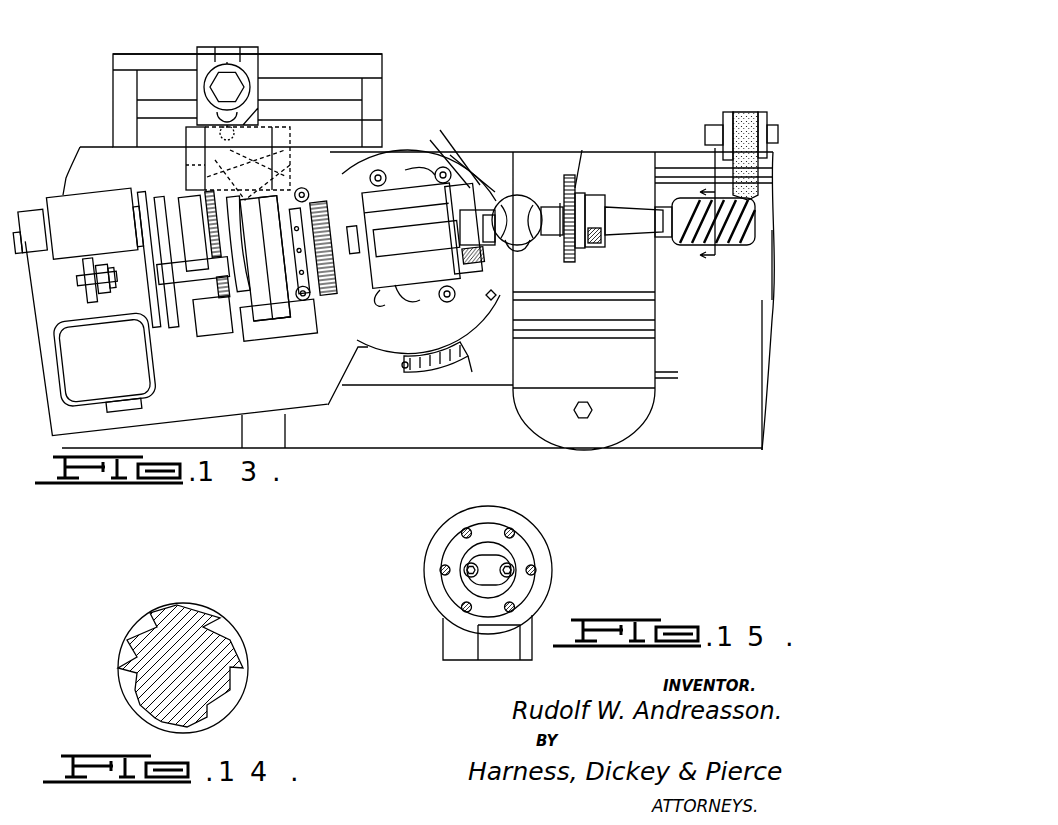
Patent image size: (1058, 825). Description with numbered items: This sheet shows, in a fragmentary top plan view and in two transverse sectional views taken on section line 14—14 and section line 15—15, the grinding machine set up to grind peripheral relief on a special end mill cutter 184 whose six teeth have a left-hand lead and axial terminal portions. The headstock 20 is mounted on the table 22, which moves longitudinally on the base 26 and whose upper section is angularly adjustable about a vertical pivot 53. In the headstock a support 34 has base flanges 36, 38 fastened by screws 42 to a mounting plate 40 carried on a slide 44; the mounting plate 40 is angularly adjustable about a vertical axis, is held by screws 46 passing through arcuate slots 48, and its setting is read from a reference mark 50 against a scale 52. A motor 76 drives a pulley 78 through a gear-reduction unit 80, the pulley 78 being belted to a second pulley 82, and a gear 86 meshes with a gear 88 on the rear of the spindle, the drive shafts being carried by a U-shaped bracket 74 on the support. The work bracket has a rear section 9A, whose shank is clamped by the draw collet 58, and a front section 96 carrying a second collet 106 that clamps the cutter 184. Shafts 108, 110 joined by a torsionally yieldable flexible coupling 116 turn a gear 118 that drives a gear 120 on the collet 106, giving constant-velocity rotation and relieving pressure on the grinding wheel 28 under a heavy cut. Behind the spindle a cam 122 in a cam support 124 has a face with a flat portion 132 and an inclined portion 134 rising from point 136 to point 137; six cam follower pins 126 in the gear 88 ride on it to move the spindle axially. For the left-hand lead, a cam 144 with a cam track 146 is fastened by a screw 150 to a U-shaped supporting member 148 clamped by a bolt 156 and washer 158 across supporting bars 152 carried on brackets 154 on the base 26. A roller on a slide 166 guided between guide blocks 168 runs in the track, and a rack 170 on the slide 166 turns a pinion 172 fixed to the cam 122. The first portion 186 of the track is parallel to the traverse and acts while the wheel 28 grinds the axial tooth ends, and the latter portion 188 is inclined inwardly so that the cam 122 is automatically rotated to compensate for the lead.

In FIG. 13, the line 14— 14 is at (682, 147).
In FIG. 13, the line 15— 15 is at (322, 359).
In FIG. 13, the headstock 20 is at (469, 140).
In FIG. 13, the table 22 is at (671, 373).
In FIG. 13, the base 26 is at (766, 266).
In FIG. 13, the grinding wheel 28 is at (755, 116).
In FIG. 13, the support 34 is at (430, 274).
In FIG. 13, the base flange 36 is at (492, 183).
In FIG. 13, the base flange 38 is at (470, 285).
In FIG. 13, the mounting plate 40 is at (482, 320).
In FIG. 13, the screws 42 is at (380, 170).
In FIG. 13, the slide 44 is at (522, 364).
In FIG. 13, the screws 46 is at (462, 161).
In FIG. 13, the arcuate slots 48 is at (445, 166).
In FIG. 13, the reference mark 50 is at (436, 356).
In FIG. 13, the scale 52 is at (447, 370).
In FIG. 13, the vertical pivot 53 is at (593, 410).
In FIG. 13, the draw collet 58 is at (489, 199).
In FIG. 13, the U-shaped bracket 74 is at (362, 223).
In FIG. 13, the motor 76 is at (112, 369).
In FIG. 13, the pulley 78 is at (152, 208).
In FIG. 13, the gear-reduction unit 80 is at (93, 236).
In FIG. 13, the second pulley 82 is at (98, 277).
In FIG. 13, the gear 86 is at (336, 239).
In FIG. 13, the gear 88 is at (318, 215).
In FIG. 13, the rear bracket section 9A is at (528, 197).
In FIG. 13, the front bracket section 96 is at (564, 210).
In FIG. 13, the second collet 106 is at (598, 202).
In FIG. 13, the shaft 108 is at (403, 236).
In FIG. 13, the shaft 110 is at (566, 256).
In FIG. 13, the flexible coupling 116 is at (520, 246).
In FIG. 13, the gear 118 is at (586, 197).
In FIG. 13, the gear 120 is at (578, 190).
In FIG. 13, the cam 122 is at (296, 252).
In FIG. 13, the cam support 124 is at (268, 304).
In FIG. 15, the cam support 124 is at (545, 542).
In FIG. 13, the cam followers 126 is at (285, 278).
In FIG. 15, the cam followers 126 is at (468, 528).
In FIG. 15, the flat portion 132 is at (490, 523).
In FIG. 15, the inclined portion 134 is at (526, 590).
In FIG. 15, the point 136 is at (505, 601).
In FIG. 15, the point 137 is at (522, 573).
In FIG. 13, the cam 144 is at (270, 152).
In FIG. 13, the cam track 146 is at (283, 176).
In FIG. 13, the adjustable supporting member 148 is at (262, 60).
In FIG. 13, the screw 150 is at (243, 116).
In FIG. 13, the supporting bars 152 is at (330, 56).
In FIG. 13, the brackets 154 is at (130, 94).
In FIG. 13, the bolt 156 is at (238, 77).
In FIG. 13, the washer 158 is at (233, 58).
In FIG. 13, the slide 166 is at (226, 338).
In FIG. 13, the guide blocks 168 is at (172, 336).
In FIG. 13, the rack 170 is at (160, 238).
In FIG. 13, the pinion 172 is at (178, 293).
In FIG. 13, the end mill cutter 184 is at (750, 222).
In FIG. 14, the end mill cutter 184 is at (215, 650).
In FIG. 13, the first portion 186 is at (186, 140).
In FIG. 13, the latter portion 188 is at (234, 138).